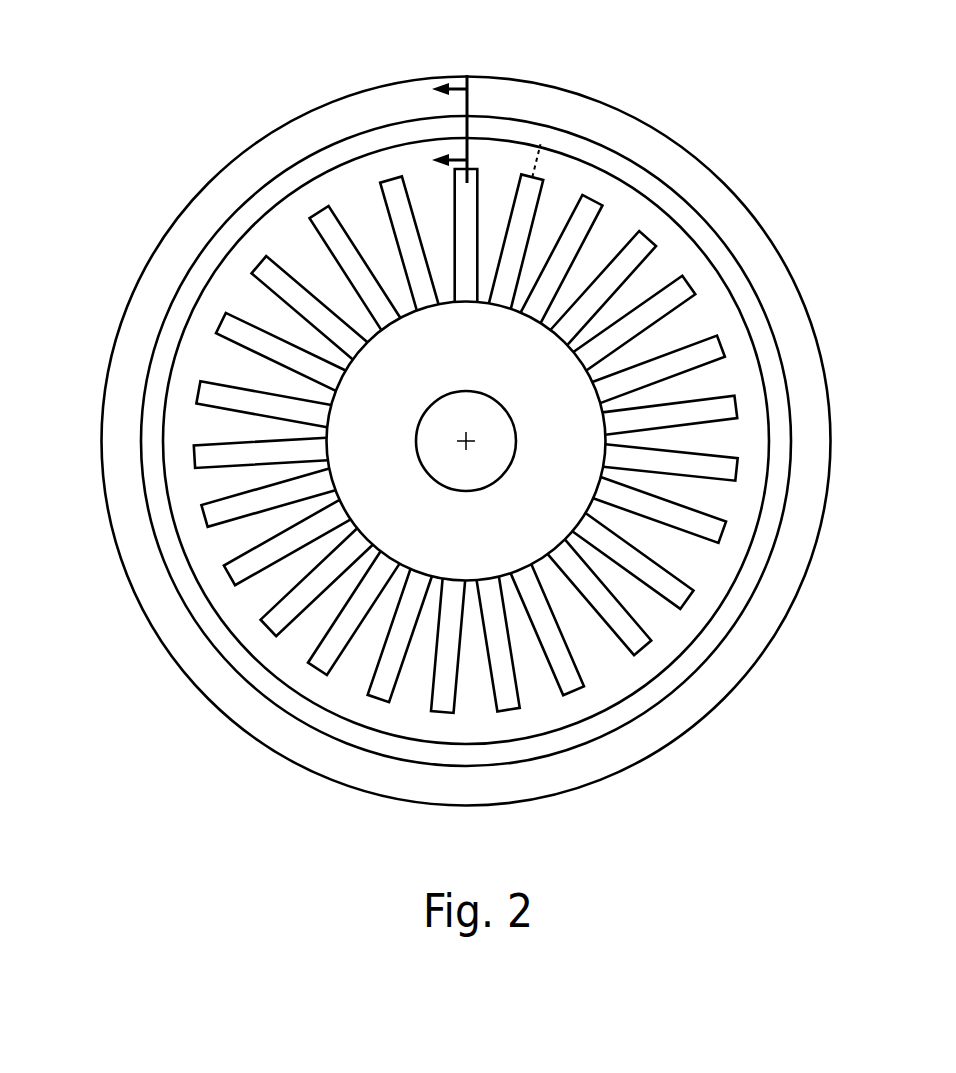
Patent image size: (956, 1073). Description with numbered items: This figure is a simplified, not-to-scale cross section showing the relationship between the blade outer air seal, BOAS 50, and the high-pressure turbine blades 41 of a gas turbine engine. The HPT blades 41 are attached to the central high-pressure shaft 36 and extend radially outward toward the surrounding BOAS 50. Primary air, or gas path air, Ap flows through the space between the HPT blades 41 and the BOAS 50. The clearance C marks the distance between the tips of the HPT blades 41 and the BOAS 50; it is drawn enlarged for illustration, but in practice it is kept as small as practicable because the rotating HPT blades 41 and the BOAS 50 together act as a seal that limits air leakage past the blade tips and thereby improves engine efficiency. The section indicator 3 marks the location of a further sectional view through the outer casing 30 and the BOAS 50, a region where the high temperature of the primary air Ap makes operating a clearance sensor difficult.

The turbine housing / outer casing 30 is at (177, 217).
The BOAS 50 is at (657, 158).
The HPT blades 41 is at (688, 285).
The high-pressure shaft 36 is at (555, 403).
The clearance C is at (533, 165).
The primary air Ap is at (207, 553).
The section line 3- 3 is at (437, 129).